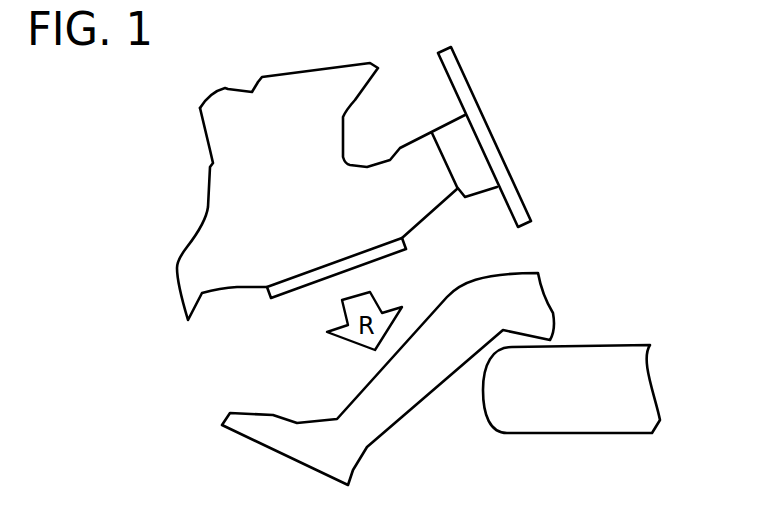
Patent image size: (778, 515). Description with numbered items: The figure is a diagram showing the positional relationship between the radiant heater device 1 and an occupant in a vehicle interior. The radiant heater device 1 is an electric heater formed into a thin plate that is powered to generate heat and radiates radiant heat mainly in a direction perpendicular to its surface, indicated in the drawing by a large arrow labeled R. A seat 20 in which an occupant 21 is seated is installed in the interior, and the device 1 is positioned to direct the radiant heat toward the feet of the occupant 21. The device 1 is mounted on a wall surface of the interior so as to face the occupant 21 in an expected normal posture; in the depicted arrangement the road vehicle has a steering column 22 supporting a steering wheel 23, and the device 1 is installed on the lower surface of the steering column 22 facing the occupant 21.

The radiant heater device 1 is at (312, 286).
The seat 20 is at (547, 435).
The occupant 21 is at (400, 420).
The steering column 22 is at (418, 222).
The steering wheel 23 is at (485, 110).